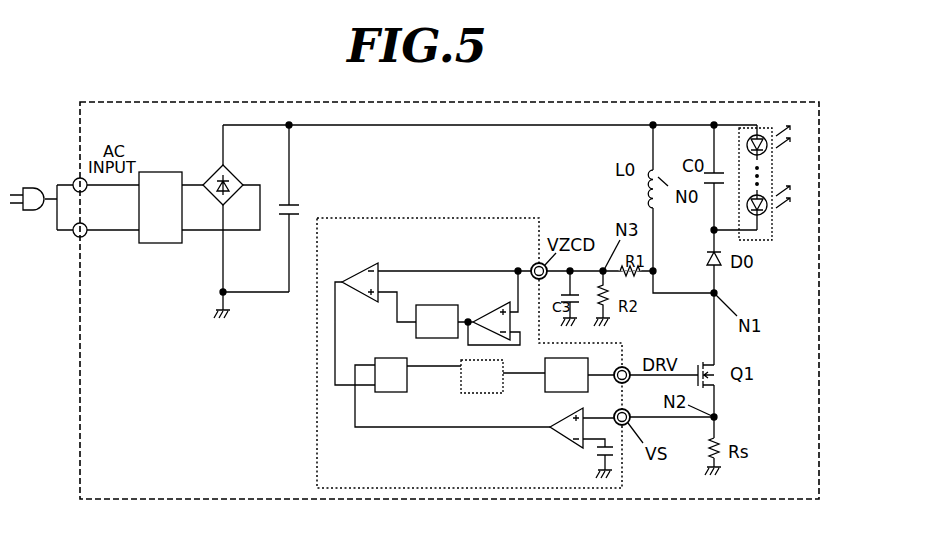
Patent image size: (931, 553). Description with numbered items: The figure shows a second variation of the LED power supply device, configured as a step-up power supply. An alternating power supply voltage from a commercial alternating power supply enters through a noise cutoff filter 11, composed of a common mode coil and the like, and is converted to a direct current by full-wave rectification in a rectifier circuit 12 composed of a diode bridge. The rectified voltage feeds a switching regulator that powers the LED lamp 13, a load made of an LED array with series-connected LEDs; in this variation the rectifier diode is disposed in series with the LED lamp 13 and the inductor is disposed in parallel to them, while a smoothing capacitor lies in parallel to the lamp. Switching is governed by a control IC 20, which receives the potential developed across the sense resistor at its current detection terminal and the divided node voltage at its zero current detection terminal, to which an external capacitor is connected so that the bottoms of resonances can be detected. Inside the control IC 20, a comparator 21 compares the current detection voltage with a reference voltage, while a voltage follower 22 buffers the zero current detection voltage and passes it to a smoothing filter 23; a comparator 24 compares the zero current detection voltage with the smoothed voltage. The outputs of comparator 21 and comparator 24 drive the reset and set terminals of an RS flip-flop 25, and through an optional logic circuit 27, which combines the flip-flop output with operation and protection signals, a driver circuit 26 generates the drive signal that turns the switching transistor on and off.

The noise cutoff filter 11 is at (160, 243).
The rectifier circuit 12 is at (236, 172).
The LED lamp 13 is at (772, 240).
The control IC 20 is at (523, 217).
The comparator 21 is at (568, 446).
The voltage follower 22 is at (495, 305).
The smoothing filter 23 is at (437, 305).
The comparator 24 is at (363, 265).
The RS flip-flop 25 is at (400, 392).
The driver circuit 26 is at (548, 393).
The logic circuit 27 is at (481, 393).